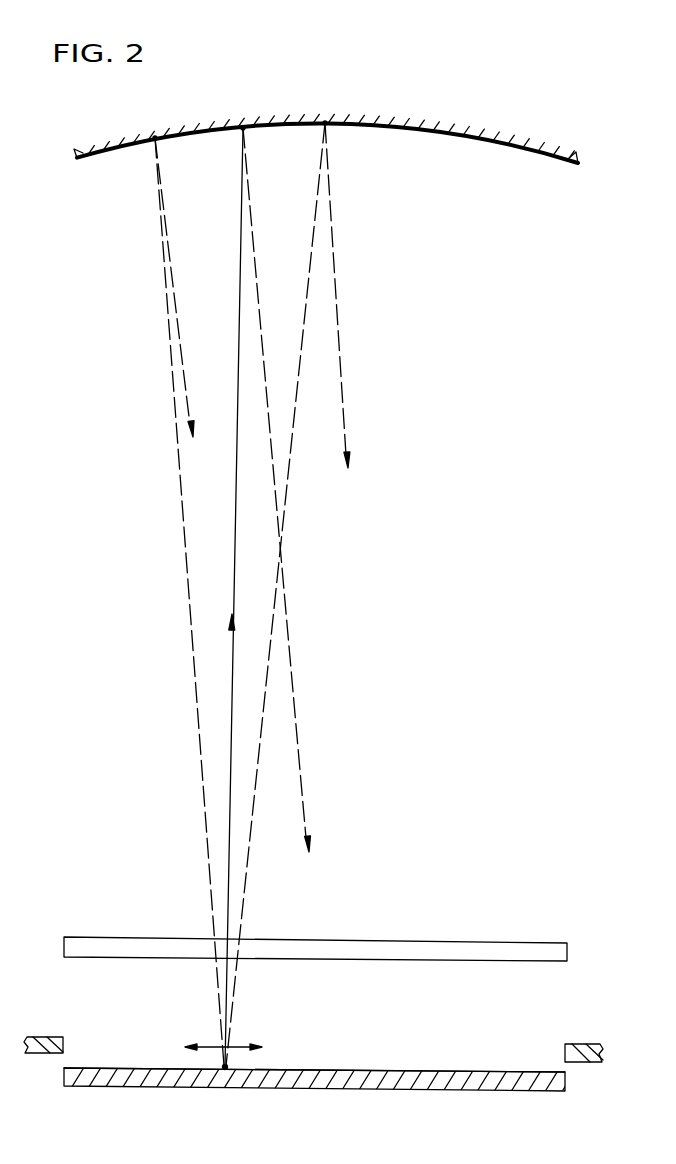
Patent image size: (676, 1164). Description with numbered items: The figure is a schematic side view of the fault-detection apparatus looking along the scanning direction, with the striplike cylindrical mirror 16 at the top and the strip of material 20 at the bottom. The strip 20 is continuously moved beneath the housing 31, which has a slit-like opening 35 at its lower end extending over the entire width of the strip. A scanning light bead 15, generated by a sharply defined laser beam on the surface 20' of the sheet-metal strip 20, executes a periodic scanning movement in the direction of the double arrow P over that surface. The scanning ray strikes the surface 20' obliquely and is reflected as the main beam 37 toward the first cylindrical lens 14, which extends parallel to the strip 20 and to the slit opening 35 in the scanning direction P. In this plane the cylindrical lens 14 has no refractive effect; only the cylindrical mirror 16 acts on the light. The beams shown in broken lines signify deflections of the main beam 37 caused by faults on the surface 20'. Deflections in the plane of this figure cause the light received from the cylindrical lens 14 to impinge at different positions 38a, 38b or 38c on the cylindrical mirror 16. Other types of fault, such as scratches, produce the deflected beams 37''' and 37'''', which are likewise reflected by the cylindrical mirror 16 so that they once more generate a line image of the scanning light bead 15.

The striplike cylindrical mirror 16 is at (386, 88).
The impingement position on cylindrical mirror 38a is at (154, 140).
The impingement position on cylindrical mirror 38b is at (244, 130).
The impingement position on cylindrical mirror 38c is at (326, 125).
The main beam 37 is at (194, 597).
The deflected light beam 37''' is at (169, 602).
The deflected light beam 37'''' is at (282, 594).
The first cylindrical lens 14 is at (355, 943).
The strip of material 20 is at (320, 1097).
The surface of the strip 20' is at (314, 1048).
The scanning light bead 15 is at (227, 1068).
The scanning direction P is at (223, 1037).
The housing 31 is at (37, 1053).
The opening 35 is at (80, 1043).